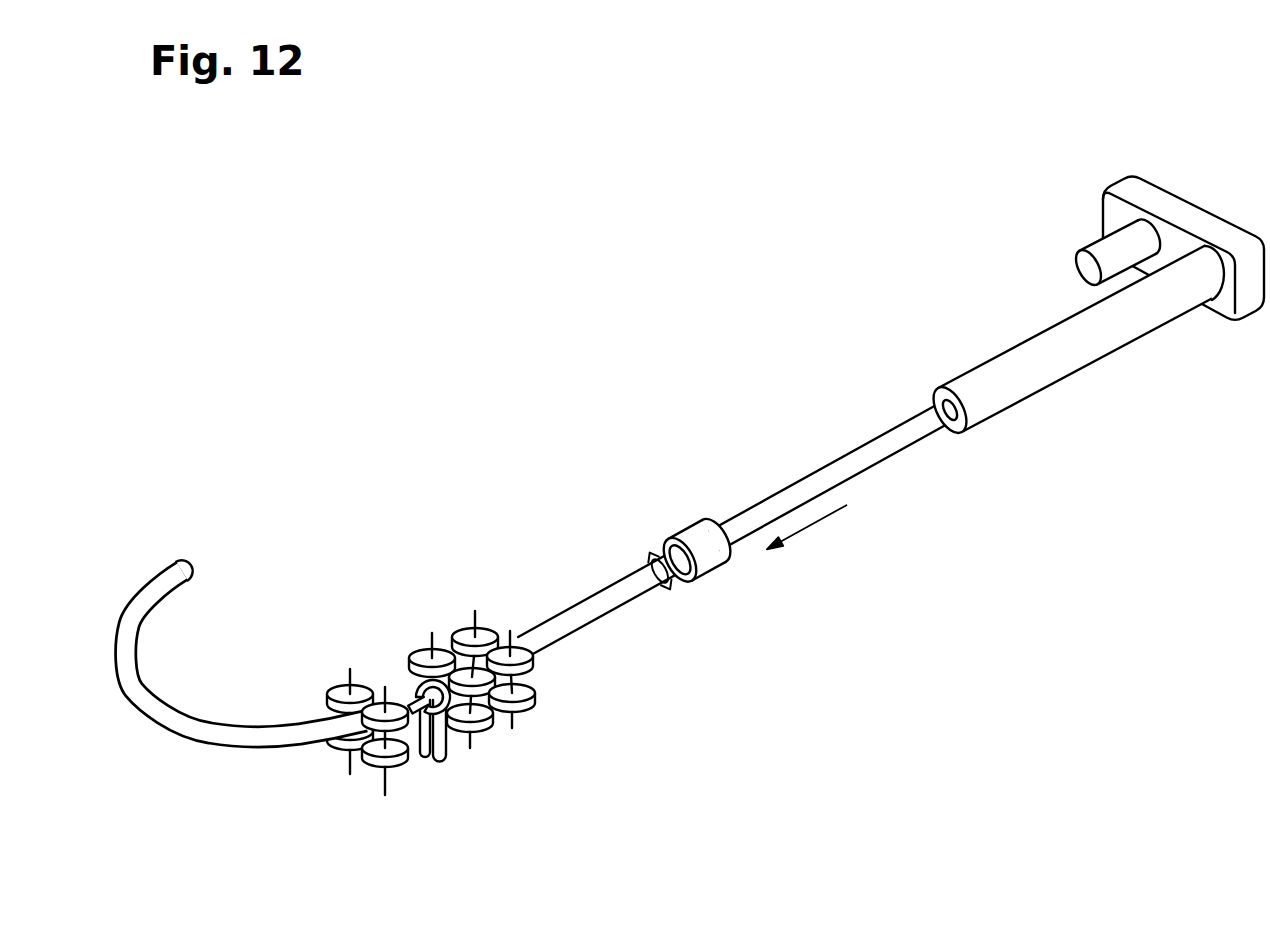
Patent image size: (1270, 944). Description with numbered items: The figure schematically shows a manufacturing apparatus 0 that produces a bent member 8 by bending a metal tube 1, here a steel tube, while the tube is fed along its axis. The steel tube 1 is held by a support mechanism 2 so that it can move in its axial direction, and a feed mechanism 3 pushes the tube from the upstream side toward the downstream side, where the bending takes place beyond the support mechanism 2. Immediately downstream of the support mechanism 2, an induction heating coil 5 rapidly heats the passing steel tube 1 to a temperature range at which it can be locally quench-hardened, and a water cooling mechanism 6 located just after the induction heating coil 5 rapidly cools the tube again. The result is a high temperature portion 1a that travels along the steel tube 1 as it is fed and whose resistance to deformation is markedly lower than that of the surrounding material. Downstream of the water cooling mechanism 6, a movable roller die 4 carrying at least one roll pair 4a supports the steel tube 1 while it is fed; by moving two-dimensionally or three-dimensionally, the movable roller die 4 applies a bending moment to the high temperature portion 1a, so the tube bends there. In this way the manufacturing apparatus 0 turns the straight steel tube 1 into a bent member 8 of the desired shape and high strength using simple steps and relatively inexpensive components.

The manufacturing apparatus 0 is at (695, 499).
The metal tube 1 is at (572, 612).
The high temperature portion 1a is at (405, 692).
The support mechanism 2 is at (432, 633).
The feed mechanism 3 is at (983, 368).
The movable roller die 4 is at (267, 654).
The roll pair 4a is at (267, 654).
The induction heating coil 5 is at (436, 760).
The water cooling mechanism 6 is at (445, 717).
The bent member 8 is at (174, 563).